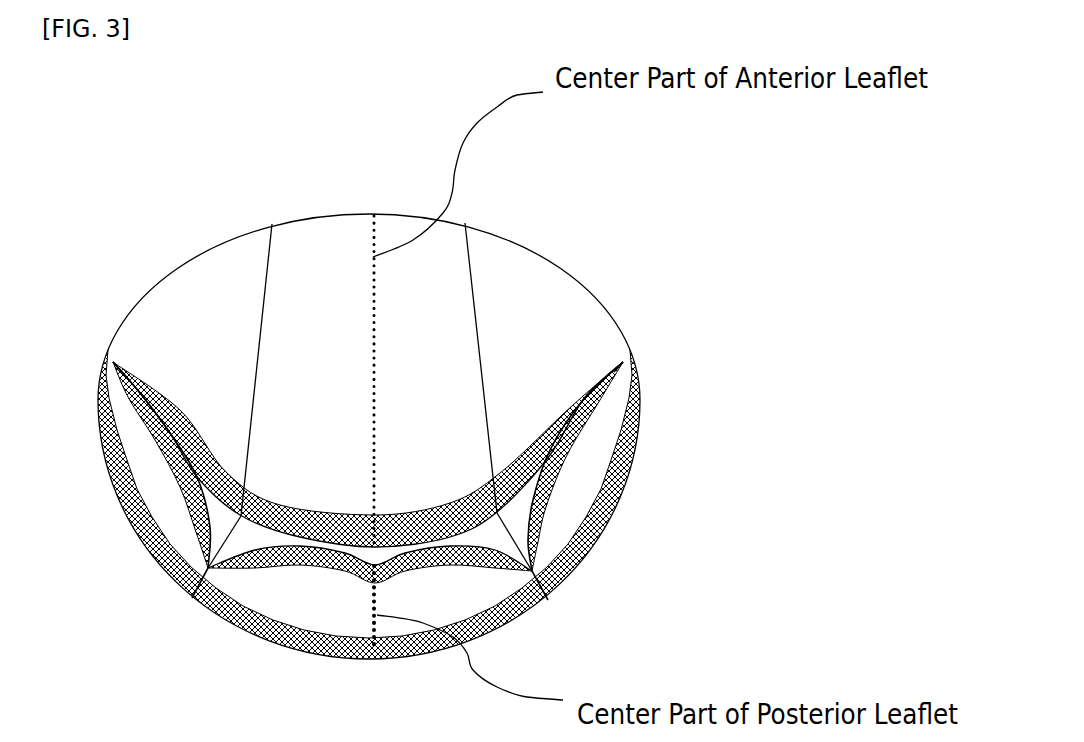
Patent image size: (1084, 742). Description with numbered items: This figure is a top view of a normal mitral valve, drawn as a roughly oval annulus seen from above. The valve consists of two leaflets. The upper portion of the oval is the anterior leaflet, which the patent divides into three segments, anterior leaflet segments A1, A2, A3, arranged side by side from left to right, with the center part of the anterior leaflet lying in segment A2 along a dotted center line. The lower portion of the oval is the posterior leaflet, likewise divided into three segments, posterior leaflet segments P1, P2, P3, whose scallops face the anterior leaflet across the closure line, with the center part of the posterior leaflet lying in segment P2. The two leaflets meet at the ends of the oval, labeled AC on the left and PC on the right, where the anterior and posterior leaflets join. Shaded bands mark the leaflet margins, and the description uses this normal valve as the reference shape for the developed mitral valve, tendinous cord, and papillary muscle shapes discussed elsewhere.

The anterior commissure AC is at (90, 361).
The posterior commissure PC is at (646, 355).
The anterior leaflet segment A1 is at (219, 370).
The anterior leaflet segment A2 is at (368, 381).
The anterior leaflet segment A3 is at (523, 368).
The posterior leaflet segment P1 is at (177, 480).
The posterior leaflet segment P2 is at (370, 597).
The posterior leaflet segment P3 is at (560, 481).